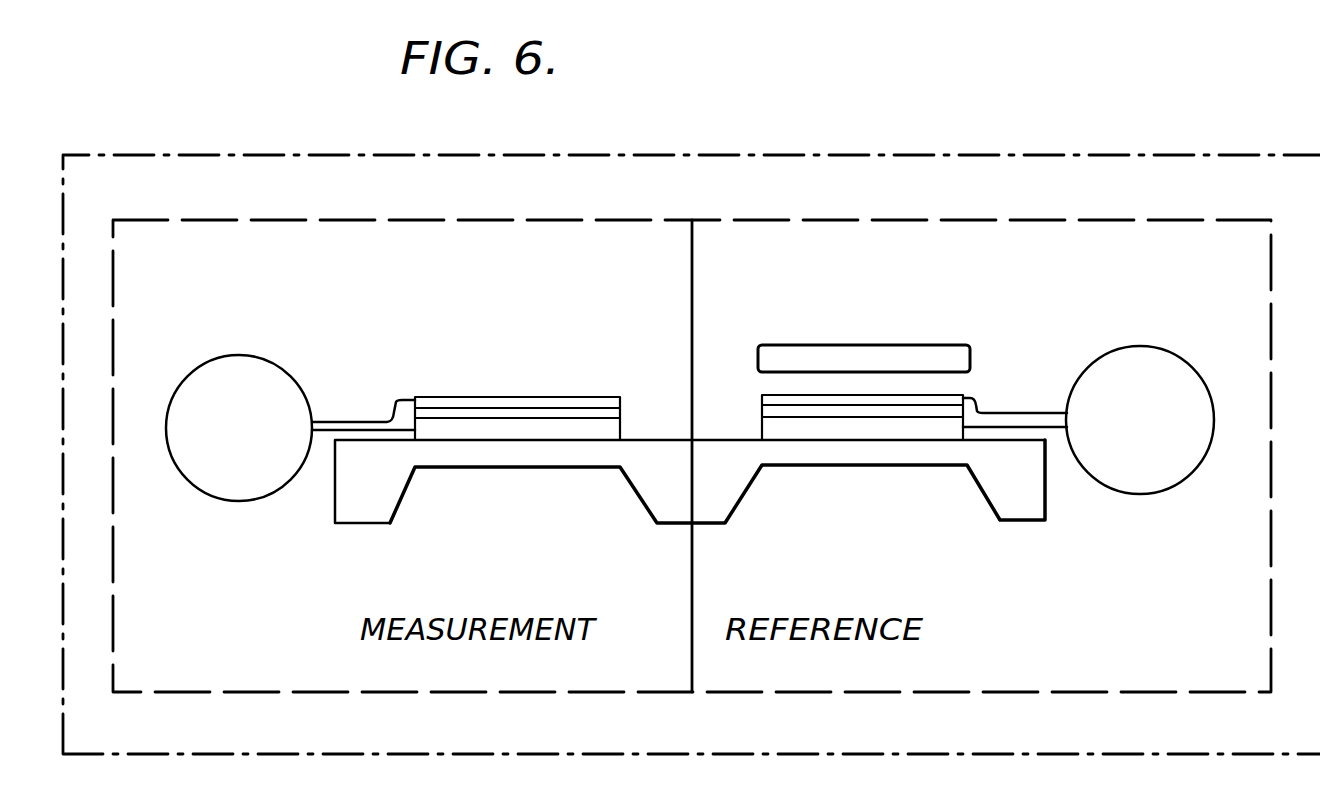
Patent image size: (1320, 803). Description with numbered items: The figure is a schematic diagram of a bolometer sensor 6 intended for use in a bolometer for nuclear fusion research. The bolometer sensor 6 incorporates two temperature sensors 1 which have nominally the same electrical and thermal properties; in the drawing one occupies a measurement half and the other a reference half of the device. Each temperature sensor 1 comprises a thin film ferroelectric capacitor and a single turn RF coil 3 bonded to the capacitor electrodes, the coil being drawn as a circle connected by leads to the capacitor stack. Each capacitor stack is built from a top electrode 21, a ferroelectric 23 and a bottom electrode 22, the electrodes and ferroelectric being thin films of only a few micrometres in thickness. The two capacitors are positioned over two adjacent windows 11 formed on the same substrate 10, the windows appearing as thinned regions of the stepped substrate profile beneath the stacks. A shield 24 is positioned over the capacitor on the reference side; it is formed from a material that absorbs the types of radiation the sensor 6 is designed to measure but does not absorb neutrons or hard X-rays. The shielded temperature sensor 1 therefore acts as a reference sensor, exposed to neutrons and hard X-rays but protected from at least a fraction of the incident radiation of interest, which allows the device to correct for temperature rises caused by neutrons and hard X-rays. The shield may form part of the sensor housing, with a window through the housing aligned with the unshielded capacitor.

The temperature sensor 1 is at (197, 218).
The single turn RF coil 3 is at (192, 370).
The bolometer sensor 6 is at (855, 153).
The substrate 10 is at (327, 512).
The window 11 is at (480, 458).
The top electrode 21 is at (460, 400).
The bottom electrode 22 is at (625, 427).
The ferroelectric 23 is at (508, 408).
The shield 24 is at (817, 345).